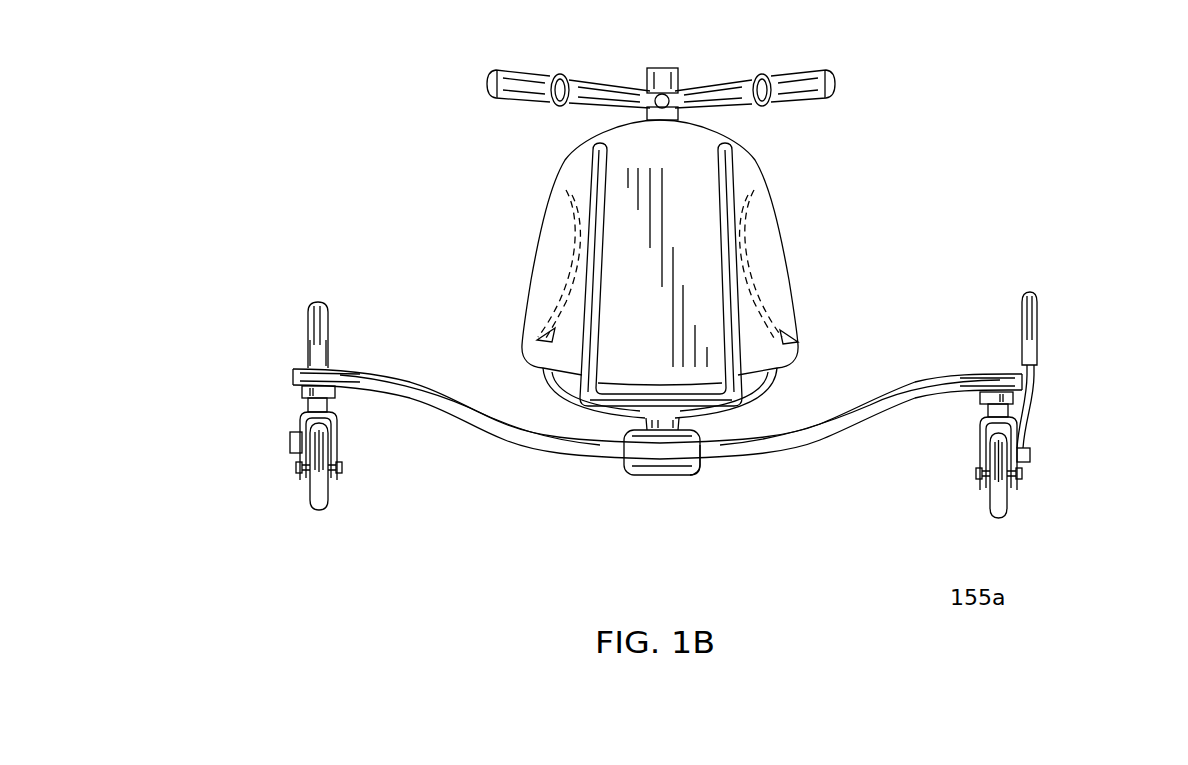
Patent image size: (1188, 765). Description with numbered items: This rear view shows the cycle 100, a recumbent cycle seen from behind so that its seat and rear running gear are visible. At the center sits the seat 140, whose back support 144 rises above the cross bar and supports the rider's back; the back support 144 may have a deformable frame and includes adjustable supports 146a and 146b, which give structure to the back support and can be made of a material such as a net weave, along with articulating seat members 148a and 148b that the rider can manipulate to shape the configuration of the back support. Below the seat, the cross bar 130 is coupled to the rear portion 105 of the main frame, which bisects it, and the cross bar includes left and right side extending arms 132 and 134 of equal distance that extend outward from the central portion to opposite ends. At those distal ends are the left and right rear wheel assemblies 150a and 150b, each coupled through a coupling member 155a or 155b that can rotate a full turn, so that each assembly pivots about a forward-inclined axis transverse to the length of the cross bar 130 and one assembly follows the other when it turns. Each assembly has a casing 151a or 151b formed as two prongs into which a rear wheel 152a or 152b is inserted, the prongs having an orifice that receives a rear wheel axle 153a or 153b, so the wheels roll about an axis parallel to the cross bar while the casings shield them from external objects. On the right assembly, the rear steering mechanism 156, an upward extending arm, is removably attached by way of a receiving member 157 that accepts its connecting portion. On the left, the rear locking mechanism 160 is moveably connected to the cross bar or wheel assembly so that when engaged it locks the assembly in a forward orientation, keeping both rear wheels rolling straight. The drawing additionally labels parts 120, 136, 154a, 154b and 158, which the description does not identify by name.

The cycle 100 is at (413, 88).
The rear portion of the main frame 105 is at (692, 470).
The steering handlebar 120 is at (600, 85).
The cross bar 130 is at (829, 425).
The left side extending arm 132 is at (373, 371).
The right side extending arm 134 is at (955, 376).
The foot rest 136 is at (650, 447).
The seat 140 is at (571, 166).
The back support 144 is at (754, 166).
The adjustable support 146a is at (590, 208).
The adjustable support 146b is at (735, 208).
The articulating seat member 148a is at (552, 329).
The articulating seat member 148b is at (790, 336).
The left rear wheel assembly 150a is at (275, 441).
The right rear wheel assembly 150b is at (1080, 431).
The casing 151a is at (340, 444).
The casing 151b is at (980, 456).
The rear wheel 152a is at (328, 502).
The rear wheel 152b is at (990, 506).
The rear wheel axle 153a is at (294, 470).
The rear wheel axle 153b is at (1020, 478).
The left swivel 154a is at (336, 404).
The right swivel 154b is at (988, 410).
The coupling member 155a is at (301, 391).
The coupling member 155b is at (1015, 399).
The rear steering mechanism 156 is at (1038, 325).
The receiving member 157 is at (1032, 456).
The left handle 158 is at (305, 320).
The rear locking mechanism 160 is at (313, 296).